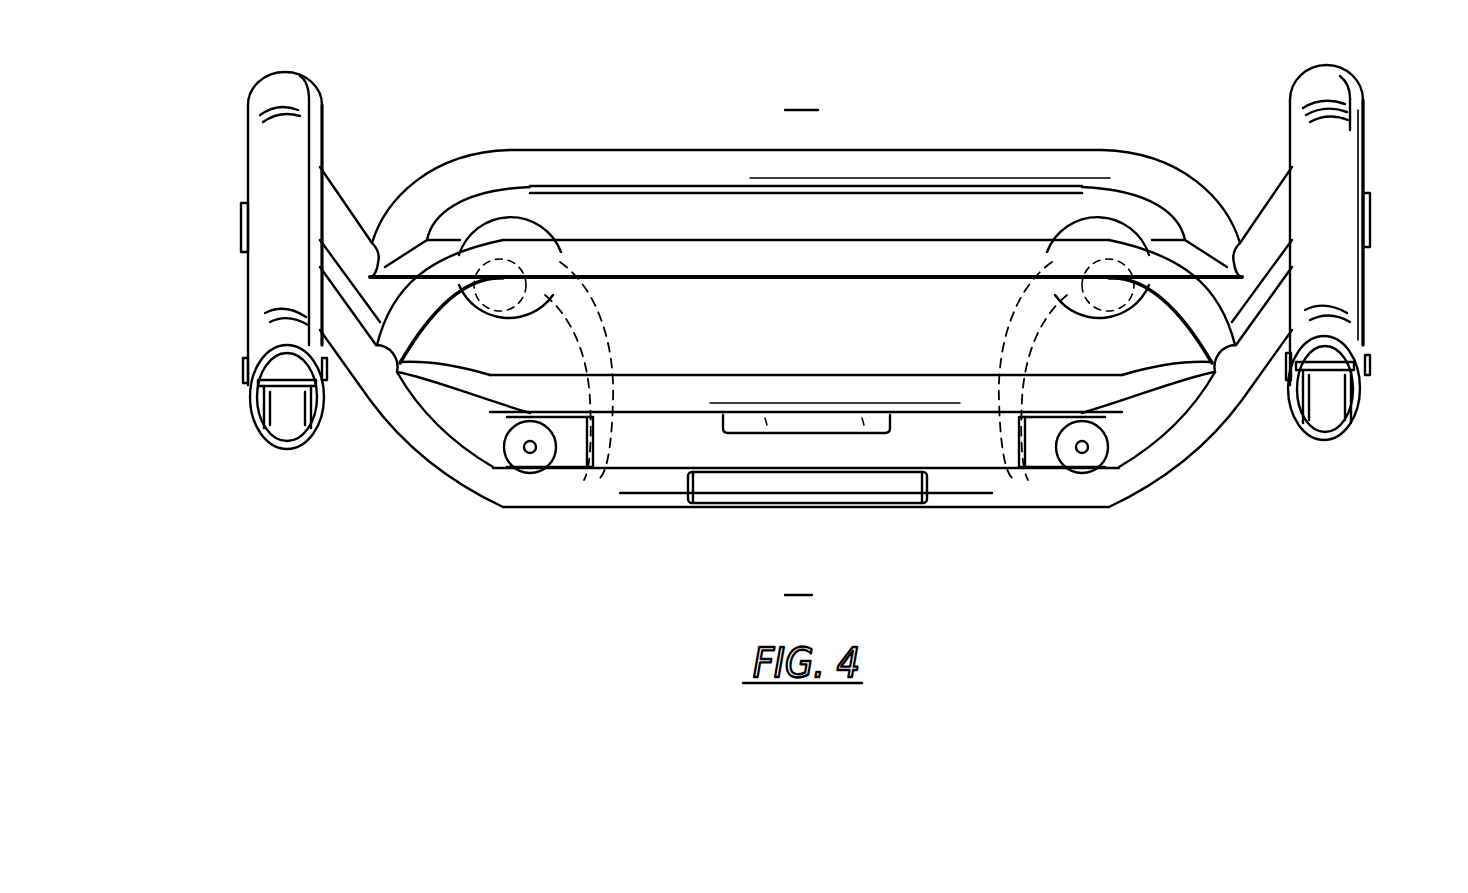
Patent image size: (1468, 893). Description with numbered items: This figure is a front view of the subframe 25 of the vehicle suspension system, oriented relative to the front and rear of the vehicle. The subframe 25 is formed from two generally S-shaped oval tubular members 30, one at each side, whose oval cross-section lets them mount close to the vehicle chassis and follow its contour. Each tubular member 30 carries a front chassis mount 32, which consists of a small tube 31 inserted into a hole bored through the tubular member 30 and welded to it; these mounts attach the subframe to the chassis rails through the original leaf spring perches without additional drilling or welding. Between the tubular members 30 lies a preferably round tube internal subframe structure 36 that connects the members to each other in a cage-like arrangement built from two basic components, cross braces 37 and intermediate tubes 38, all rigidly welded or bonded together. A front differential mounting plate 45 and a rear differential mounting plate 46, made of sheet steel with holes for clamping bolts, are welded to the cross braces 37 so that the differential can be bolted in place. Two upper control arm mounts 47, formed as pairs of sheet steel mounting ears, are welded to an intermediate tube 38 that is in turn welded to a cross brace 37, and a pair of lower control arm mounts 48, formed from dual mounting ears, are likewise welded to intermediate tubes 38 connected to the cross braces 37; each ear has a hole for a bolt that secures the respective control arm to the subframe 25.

The subframe 25 is at (1111, 86).
The tubular member 30 is at (268, 160).
The small tube 31 is at (246, 361).
The front chassis mount 32 is at (240, 387).
The internal subframe structure 36 is at (974, 512).
The cross brace 37 is at (627, 247).
The intermediate tube 38 is at (567, 272).
The front differential mounting plate 45 is at (793, 466).
The rear differential mounting plate 46 is at (893, 425).
The upper control arm mount 47 is at (502, 230).
The lower control arm mount 48 is at (538, 458).